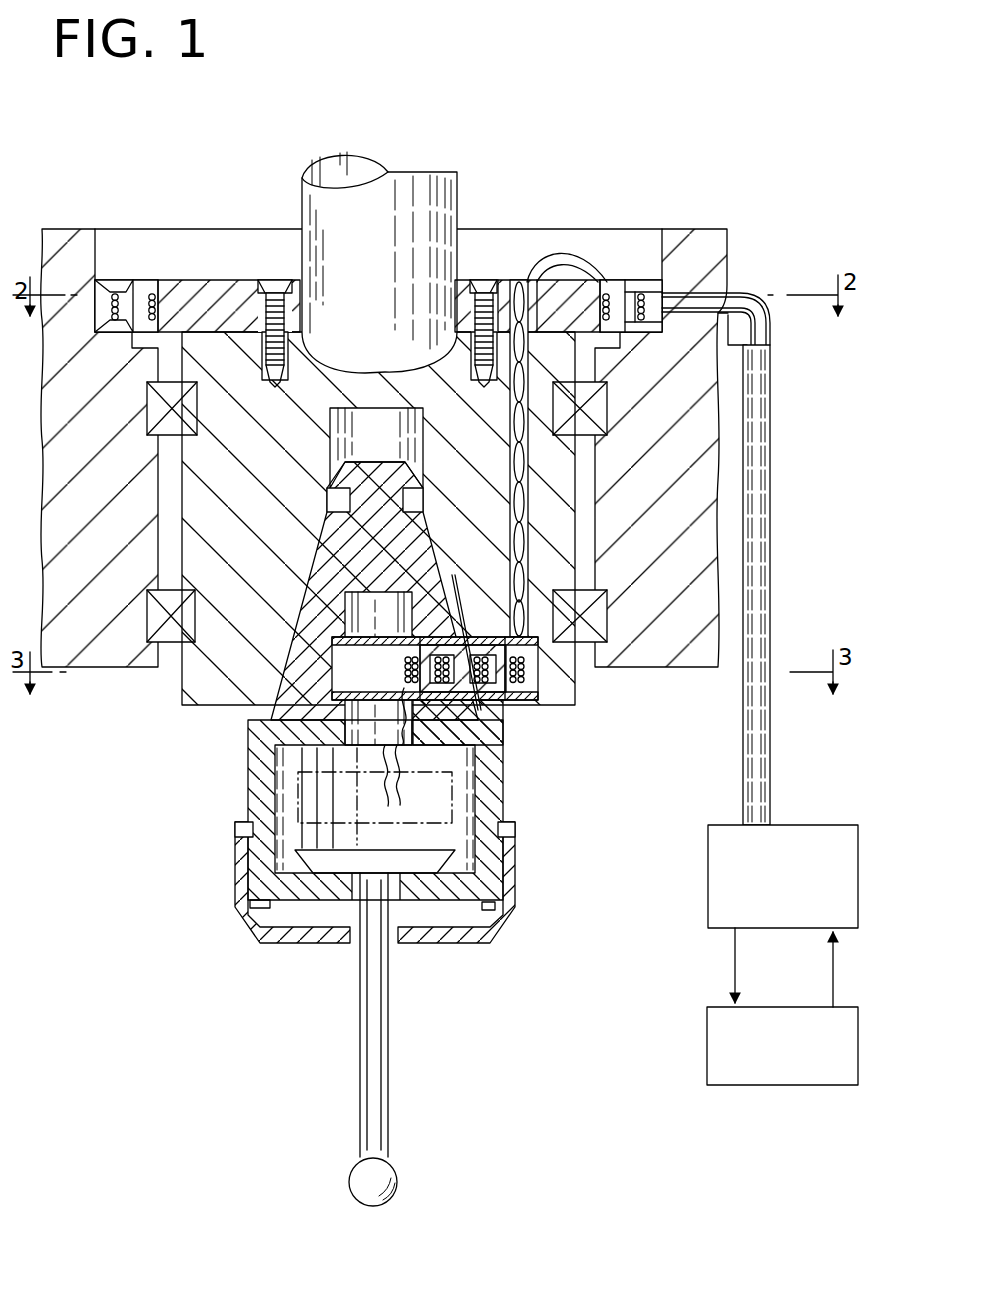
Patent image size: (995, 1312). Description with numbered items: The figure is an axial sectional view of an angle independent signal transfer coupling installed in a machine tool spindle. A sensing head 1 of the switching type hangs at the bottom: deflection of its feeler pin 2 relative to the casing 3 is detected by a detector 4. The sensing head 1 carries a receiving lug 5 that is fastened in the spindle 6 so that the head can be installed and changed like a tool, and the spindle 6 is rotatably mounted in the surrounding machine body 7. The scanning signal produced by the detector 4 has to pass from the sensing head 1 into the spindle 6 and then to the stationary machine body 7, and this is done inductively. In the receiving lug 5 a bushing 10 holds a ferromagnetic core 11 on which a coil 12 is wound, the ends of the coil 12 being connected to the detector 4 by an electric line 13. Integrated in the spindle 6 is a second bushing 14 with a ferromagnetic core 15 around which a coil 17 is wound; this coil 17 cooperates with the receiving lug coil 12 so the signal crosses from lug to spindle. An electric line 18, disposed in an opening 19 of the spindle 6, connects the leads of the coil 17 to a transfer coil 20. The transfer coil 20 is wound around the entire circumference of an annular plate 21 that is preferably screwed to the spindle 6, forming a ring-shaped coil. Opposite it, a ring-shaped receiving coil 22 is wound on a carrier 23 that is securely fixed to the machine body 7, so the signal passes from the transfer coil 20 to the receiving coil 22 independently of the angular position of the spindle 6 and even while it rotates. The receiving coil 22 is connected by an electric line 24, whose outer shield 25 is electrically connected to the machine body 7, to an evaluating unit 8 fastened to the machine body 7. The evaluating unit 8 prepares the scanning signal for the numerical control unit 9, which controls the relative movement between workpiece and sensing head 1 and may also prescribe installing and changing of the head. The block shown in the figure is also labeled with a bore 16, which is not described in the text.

The sensing head 1 is at (218, 901).
The feeler pin 2 is at (360, 1031).
The casing 3 is at (253, 745).
The detector 4 is at (322, 797).
The receiving lug 5 is at (311, 575).
The spindle 6 is at (198, 676).
The machine body 7 is at (126, 652).
The evaluating unit 8 is at (710, 868).
The numerical control unit 9 is at (710, 1040).
The bushing 10 is at (448, 706).
The ferromagnetic core 11 is at (452, 575).
The coil 12 is at (403, 658).
The electric line 13 is at (401, 770).
The bushing 14 is at (537, 643).
The ferromagnetic core 15 is at (476, 645).
The bore 16 is at (355, 430).
The coil 17 is at (524, 682).
The electric line 18 is at (553, 254).
The opening 19 is at (520, 283).
The transfer coil 20 is at (633, 282).
The annular plate 21 is at (483, 280).
The receiving coil 22 is at (663, 292).
The carrier 23 is at (647, 292).
The electric line 24 is at (748, 303).
The outer shield 25 is at (771, 360).